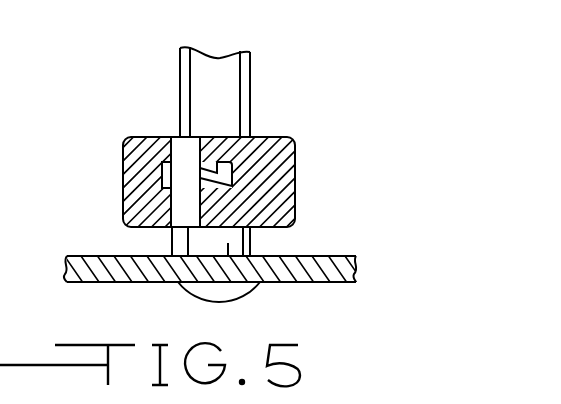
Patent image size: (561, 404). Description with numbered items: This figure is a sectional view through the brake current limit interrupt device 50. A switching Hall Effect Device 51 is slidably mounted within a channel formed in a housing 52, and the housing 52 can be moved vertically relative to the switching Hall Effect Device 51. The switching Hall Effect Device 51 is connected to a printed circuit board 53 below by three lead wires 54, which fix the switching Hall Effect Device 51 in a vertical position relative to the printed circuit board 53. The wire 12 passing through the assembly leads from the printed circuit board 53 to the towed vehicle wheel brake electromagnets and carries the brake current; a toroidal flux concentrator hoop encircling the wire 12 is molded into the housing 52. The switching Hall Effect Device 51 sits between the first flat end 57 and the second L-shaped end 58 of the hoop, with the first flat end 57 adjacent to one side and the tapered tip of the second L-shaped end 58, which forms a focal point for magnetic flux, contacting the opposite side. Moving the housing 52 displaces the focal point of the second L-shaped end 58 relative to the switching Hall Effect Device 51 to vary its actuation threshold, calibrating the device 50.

The wire 12 is at (232, 83).
The brake current limit interrupt device 50 is at (338, 94).
The switching Hall Effect Device 51 is at (182, 148).
The housing 52 is at (285, 168).
The printed circuit board 53 is at (335, 270).
The lead wires 54 is at (170, 244).
The first flat end 57 is at (160, 172).
The second L-shaped end 58 is at (218, 168).